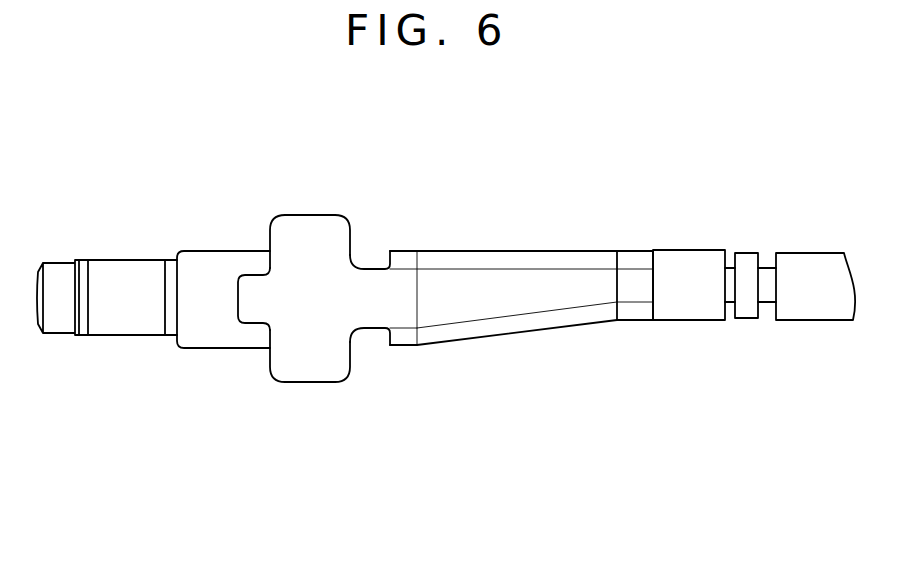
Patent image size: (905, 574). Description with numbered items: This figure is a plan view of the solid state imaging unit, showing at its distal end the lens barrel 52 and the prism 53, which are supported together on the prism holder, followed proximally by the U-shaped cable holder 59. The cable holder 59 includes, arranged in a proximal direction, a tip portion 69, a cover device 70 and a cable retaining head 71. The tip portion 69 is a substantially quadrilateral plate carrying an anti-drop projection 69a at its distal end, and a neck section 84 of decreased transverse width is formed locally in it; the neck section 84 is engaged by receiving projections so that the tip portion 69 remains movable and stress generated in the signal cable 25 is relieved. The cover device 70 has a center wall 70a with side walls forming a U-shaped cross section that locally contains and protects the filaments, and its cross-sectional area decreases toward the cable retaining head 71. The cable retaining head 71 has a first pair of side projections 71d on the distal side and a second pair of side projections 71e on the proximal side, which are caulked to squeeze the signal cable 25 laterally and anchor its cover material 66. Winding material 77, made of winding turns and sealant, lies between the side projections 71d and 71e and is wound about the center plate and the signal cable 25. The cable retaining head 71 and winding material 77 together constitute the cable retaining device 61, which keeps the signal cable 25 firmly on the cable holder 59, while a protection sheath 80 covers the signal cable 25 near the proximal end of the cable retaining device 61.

The signal cable 25 is at (767, 263).
The lens barrel 52 is at (103, 260).
The prism 53 is at (211, 280).
The cable holder 59 is at (391, 403).
The cable retaining device 61 is at (688, 247).
The cover material 66 is at (768, 302).
The tip portion 69 is at (302, 232).
The anti-drop projection 69a is at (250, 298).
The cover device 70 is at (445, 352).
The center wall 70a is at (535, 295).
The cable retaining head 71 is at (622, 323).
The first pair of side projections 71d is at (637, 323).
The winding material 77 is at (693, 322).
The second pair of side projections 71e is at (747, 318).
The protection sheath 80 is at (817, 320).
The neck section 84 is at (372, 290).